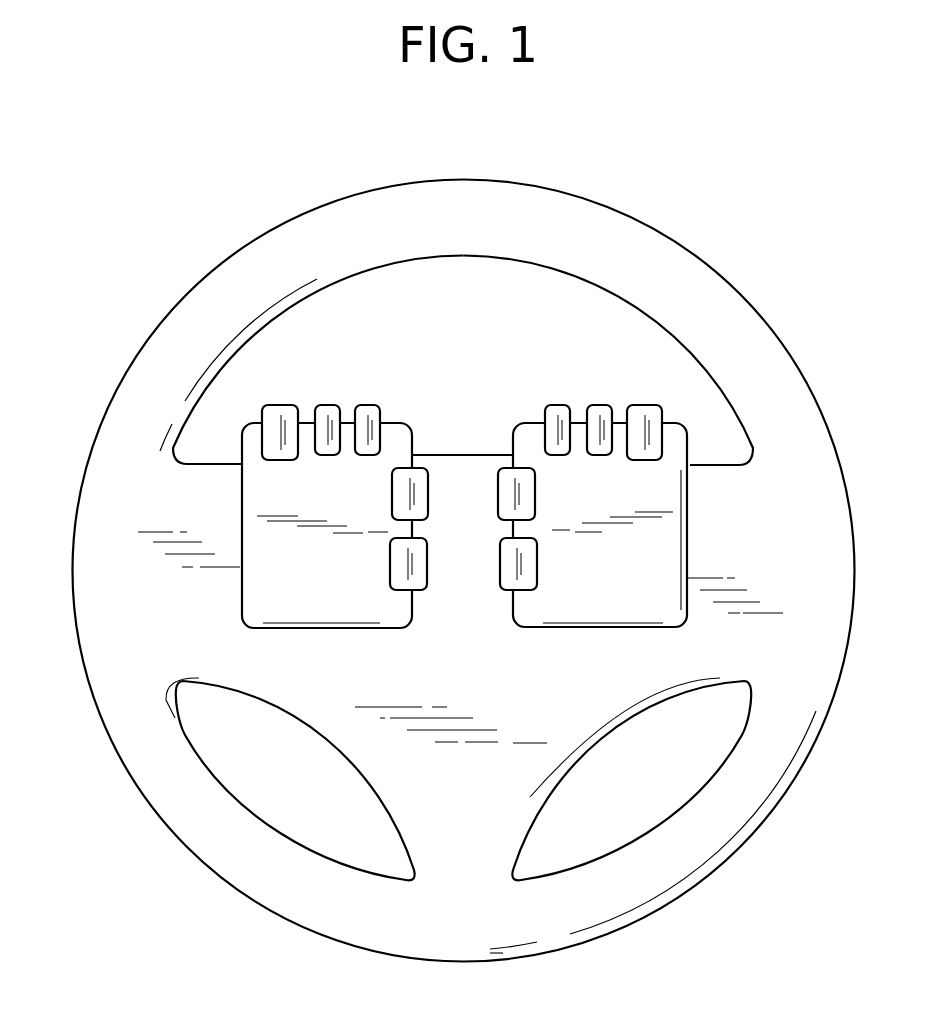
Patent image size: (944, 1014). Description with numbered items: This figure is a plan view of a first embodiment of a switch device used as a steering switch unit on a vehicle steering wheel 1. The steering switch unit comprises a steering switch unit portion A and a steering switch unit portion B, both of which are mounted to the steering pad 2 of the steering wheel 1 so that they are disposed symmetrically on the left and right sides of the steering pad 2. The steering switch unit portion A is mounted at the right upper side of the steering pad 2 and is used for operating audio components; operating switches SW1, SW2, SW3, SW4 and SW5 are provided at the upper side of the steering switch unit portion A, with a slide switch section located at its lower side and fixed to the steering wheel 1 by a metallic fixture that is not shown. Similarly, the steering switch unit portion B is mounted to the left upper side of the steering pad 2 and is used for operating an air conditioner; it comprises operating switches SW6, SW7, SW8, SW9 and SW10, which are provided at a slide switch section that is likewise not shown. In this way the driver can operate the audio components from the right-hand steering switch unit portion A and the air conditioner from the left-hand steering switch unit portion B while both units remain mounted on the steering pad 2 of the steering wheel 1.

The vehicle steering wheel 1 is at (575, 232).
The steering pad 2 is at (423, 667).
The steering switch unit portion A is at (675, 458).
The steering switch unit portion B is at (250, 457).
The operating switch SW1 is at (558, 408).
The operating switch SW2 is at (600, 403).
The operating switch SW3 is at (642, 412).
The operating switch SW4 is at (528, 495).
The operating switch SW5 is at (527, 563).
The operating switch SW6 is at (277, 412).
The operating switch SW7 is at (327, 403).
The operating switch SW8 is at (368, 408).
The operating switch SW9 is at (393, 495).
The operating switch SW10 is at (392, 570).